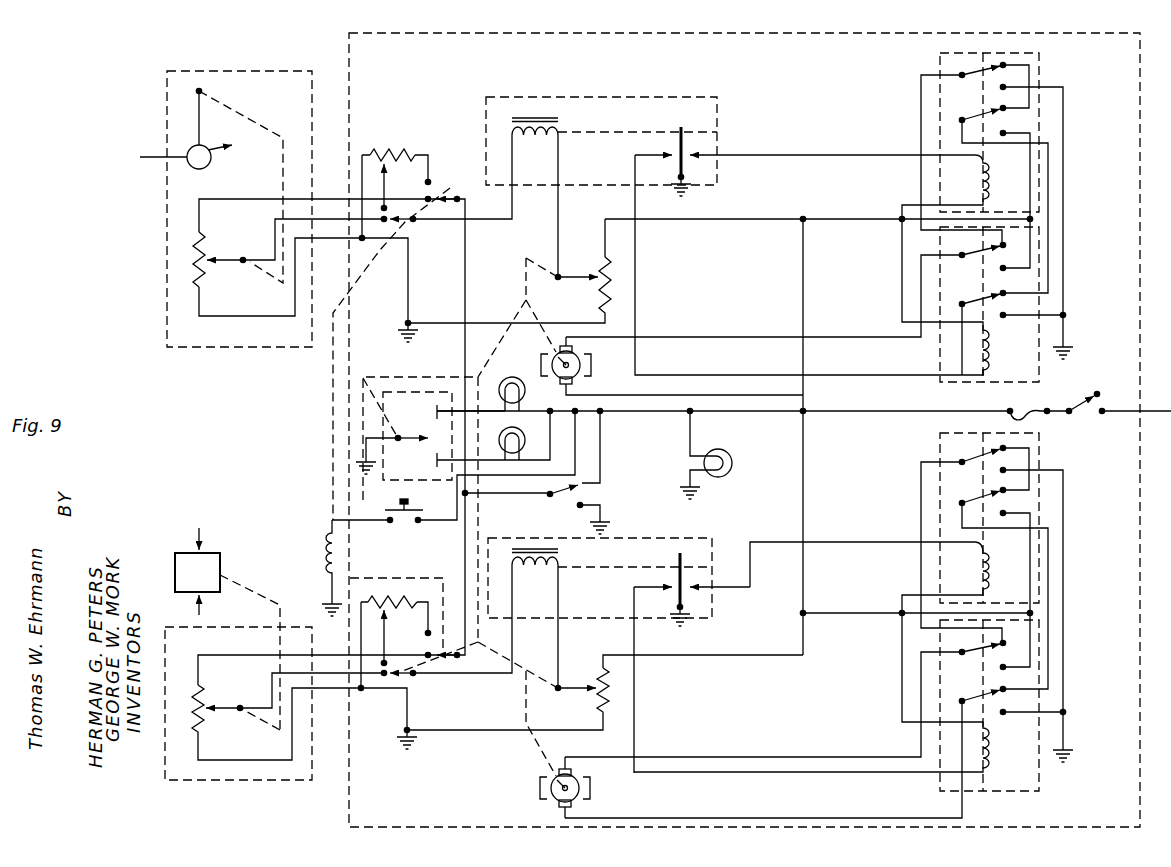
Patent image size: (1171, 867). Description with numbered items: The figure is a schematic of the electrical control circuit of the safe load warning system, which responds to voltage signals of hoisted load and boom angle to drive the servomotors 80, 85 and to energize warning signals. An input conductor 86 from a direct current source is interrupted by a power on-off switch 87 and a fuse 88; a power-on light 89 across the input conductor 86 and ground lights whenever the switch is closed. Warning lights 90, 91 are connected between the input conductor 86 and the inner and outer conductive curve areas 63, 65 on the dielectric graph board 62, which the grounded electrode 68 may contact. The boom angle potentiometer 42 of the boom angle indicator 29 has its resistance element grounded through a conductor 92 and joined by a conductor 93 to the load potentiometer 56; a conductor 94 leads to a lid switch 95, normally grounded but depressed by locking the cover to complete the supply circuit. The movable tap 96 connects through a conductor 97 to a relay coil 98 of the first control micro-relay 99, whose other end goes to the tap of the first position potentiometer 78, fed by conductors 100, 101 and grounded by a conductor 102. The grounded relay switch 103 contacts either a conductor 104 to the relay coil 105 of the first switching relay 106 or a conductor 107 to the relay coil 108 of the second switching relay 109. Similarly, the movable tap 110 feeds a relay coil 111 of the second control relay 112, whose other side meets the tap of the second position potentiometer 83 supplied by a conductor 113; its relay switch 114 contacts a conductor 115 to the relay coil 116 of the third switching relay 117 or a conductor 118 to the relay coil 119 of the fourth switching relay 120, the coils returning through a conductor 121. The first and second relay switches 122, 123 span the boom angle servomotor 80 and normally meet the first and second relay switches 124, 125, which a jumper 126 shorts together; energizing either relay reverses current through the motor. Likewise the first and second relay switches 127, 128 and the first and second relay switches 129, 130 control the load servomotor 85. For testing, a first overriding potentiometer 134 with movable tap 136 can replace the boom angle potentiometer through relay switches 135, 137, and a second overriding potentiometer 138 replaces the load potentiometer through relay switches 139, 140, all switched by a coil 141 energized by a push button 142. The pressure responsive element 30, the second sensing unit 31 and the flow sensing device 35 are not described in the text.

The boom angle indicator 29 is at (238, 349).
The pressure responsive element 30 is at (215, 560).
The second sensing unit 31 is at (232, 782).
The flow sensing device 35 is at (172, 128).
The boom angle potentiometer 42 is at (195, 284).
The load potentiometer 56 is at (192, 738).
The graph board 62 is at (391, 480).
The inner curve area 63 is at (435, 410).
The outer curve area 65 is at (433, 464).
The electrode 68 is at (421, 430).
The first position potentiometer 78 is at (595, 262).
The boom angle servomotor 80 is at (578, 356).
The second position potentiometer 83 is at (597, 704).
The load servomotor 85 is at (545, 789).
The input conductor 86 is at (1122, 416).
The power on-off switch 87 is at (1082, 396).
The fuse 88 is at (1024, 410).
The power-on light 89 is at (734, 452).
The warning light 90 is at (511, 380).
The warning light 91 is at (523, 437).
The conductor 92 is at (333, 248).
The conductor 93 is at (466, 268).
The conductor 94 is at (517, 497).
The lid switch 95 is at (563, 493).
The movable tap 96 is at (231, 277).
The conductor 97 is at (488, 230).
The relay coil 98 is at (540, 152).
The first control micro-relay 99 is at (638, 97).
The conductor 100 is at (753, 217).
The conductor 101 is at (819, 270).
The conductor 102 is at (487, 323).
The relay switch 103 is at (685, 135).
The conductor 104 is at (849, 157).
The relay coil 105 is at (988, 182).
The first switching relay 106 is at (1041, 64).
The conductor 107 is at (636, 270).
The relay coil 108 is at (990, 350).
The second switching relay 109 is at (1039, 243).
The movable tap 110 is at (228, 702).
The relay coil 111 is at (528, 583).
The second control relay 112 is at (640, 538).
The conductor 113 is at (727, 660).
The relay switch 114 is at (684, 572).
The conductor 115 is at (878, 536).
The relay coil 116 is at (1001, 565).
The third switching relay 117 is at (1039, 456).
The conductor 118 is at (636, 715).
The relay coil 119 is at (992, 745).
The fourth switching relay 120 is at (1039, 639).
The conductor 121 is at (872, 614).
The first relay switch 122 is at (978, 253).
The second relay switch 123 is at (978, 293).
The first relay switch 124 is at (972, 68).
The second relay switch 125 is at (973, 107).
The jumper 126 is at (1029, 78).
The first relay switch 127 is at (978, 647).
The second relay switch 128 is at (975, 690).
The first relay switch 129 is at (978, 454).
The second relay switch 130 is at (977, 495).
The first overriding potentiometer 134 is at (407, 146).
The relay switch 135 is at (445, 192).
The movable tap 136 is at (385, 170).
The relay switch 137 is at (403, 222).
The second overriding potentiometer 138 is at (412, 592).
The relay switch 139 is at (441, 664).
The relay switch 140 is at (400, 673).
The coil 141 is at (326, 552).
The push button 142 is at (455, 482).